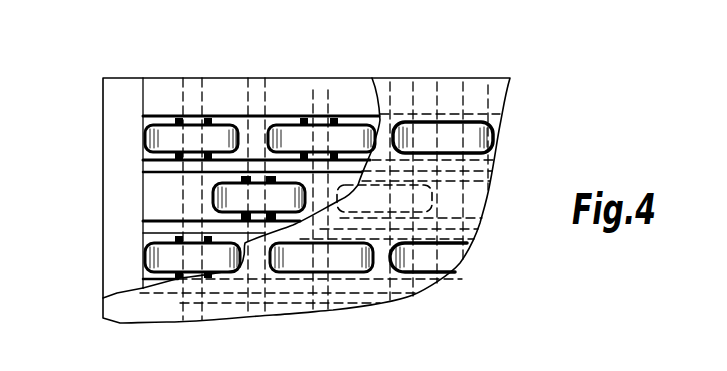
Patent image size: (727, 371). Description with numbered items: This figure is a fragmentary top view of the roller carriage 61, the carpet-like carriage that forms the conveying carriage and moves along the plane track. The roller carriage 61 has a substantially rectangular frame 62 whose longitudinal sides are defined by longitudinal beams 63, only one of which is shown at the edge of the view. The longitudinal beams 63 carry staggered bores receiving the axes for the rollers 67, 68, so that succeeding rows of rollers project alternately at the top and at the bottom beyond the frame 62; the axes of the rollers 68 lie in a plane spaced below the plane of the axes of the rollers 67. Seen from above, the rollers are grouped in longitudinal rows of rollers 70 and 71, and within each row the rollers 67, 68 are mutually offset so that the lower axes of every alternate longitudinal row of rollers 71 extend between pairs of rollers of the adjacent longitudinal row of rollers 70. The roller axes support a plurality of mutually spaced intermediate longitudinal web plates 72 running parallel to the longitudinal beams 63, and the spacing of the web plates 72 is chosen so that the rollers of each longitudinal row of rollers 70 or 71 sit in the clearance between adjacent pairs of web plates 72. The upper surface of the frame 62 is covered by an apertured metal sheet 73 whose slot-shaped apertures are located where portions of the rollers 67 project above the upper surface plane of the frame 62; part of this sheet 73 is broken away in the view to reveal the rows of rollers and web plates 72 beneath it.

The roller carriage 61 is at (107, 71).
The frame 62 is at (112, 124).
The longitudinal beam 63 is at (158, 85).
The roller 67 is at (217, 132).
The roller 68 is at (235, 192).
The longitudinal row of rollers 70 is at (494, 138).
The longitudinal row of rollers 71 is at (409, 198).
The intermediate longitudinal web plate 72 is at (148, 170).
The apertured metal sheet 73 is at (478, 82).